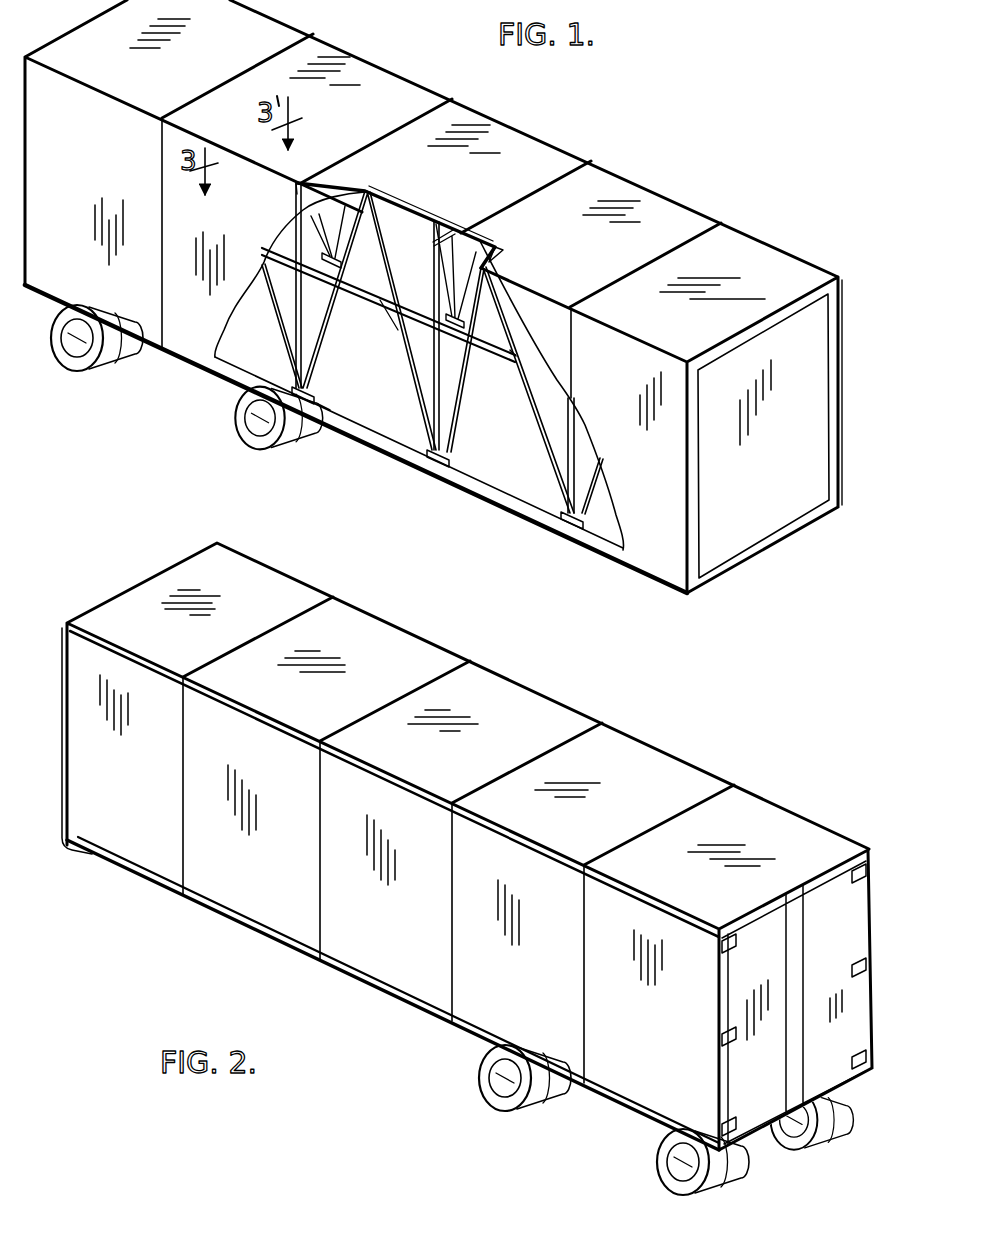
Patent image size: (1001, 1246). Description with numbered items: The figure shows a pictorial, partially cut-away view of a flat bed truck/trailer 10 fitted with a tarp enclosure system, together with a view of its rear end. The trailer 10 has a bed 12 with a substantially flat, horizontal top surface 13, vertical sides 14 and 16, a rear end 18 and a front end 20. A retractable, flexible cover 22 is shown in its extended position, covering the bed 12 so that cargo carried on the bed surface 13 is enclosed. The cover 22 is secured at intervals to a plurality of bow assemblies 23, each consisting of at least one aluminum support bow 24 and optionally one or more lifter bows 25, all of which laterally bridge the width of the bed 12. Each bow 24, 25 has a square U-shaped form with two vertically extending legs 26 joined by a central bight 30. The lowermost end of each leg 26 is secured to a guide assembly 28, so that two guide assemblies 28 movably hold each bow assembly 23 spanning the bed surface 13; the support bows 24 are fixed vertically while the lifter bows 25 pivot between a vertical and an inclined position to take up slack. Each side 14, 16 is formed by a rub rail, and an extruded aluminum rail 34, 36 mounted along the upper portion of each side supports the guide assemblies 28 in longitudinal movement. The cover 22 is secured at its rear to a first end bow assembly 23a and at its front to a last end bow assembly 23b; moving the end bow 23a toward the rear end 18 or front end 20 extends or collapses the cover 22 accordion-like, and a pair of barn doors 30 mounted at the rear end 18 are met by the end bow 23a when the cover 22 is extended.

In FIG. 1, the flat bed truck/trailer 10 is at (752, 200).
In FIG. 2, the flat bed truck/trailer 10 is at (88, 588).
In FIG. 1, the bed 12 is at (373, 390).
In FIG. 1, the top surface 13 is at (528, 455).
In FIG. 1, the vertical side 14 is at (388, 465).
In FIG. 2, the vertical side 16 is at (222, 920).
In FIG. 2, the rear end 18 is at (765, 1125).
In FIG. 1, the front end 20 is at (812, 530).
In FIG. 1, the retractable flexible cover 22 is at (539, 162).
In FIG. 2, the retractable flexible cover 22 is at (655, 770).
In FIG. 1, the bow assembly 23 is at (408, 392).
In FIG. 1, the first end bow assembly 23a is at (26, 160).
In FIG. 2, the first end bow assembly 23a is at (719, 1078).
In FIG. 2, the last end bow assembly 23b is at (68, 778).
In FIG. 1, the support bow 24 is at (344, 206).
In FIG. 1, the lifter bow 25 is at (390, 240).
In FIG. 1, the leg 26 is at (496, 238).
In FIG. 1, the guide assembly 28 is at (462, 470).
In FIG. 1, the bight 30 is at (447, 241).
In FIG. 2, the bight 30 is at (771, 988).
In FIG. 1, the rail 34 is at (325, 432).
In FIG. 1, the rail 36 is at (508, 356).